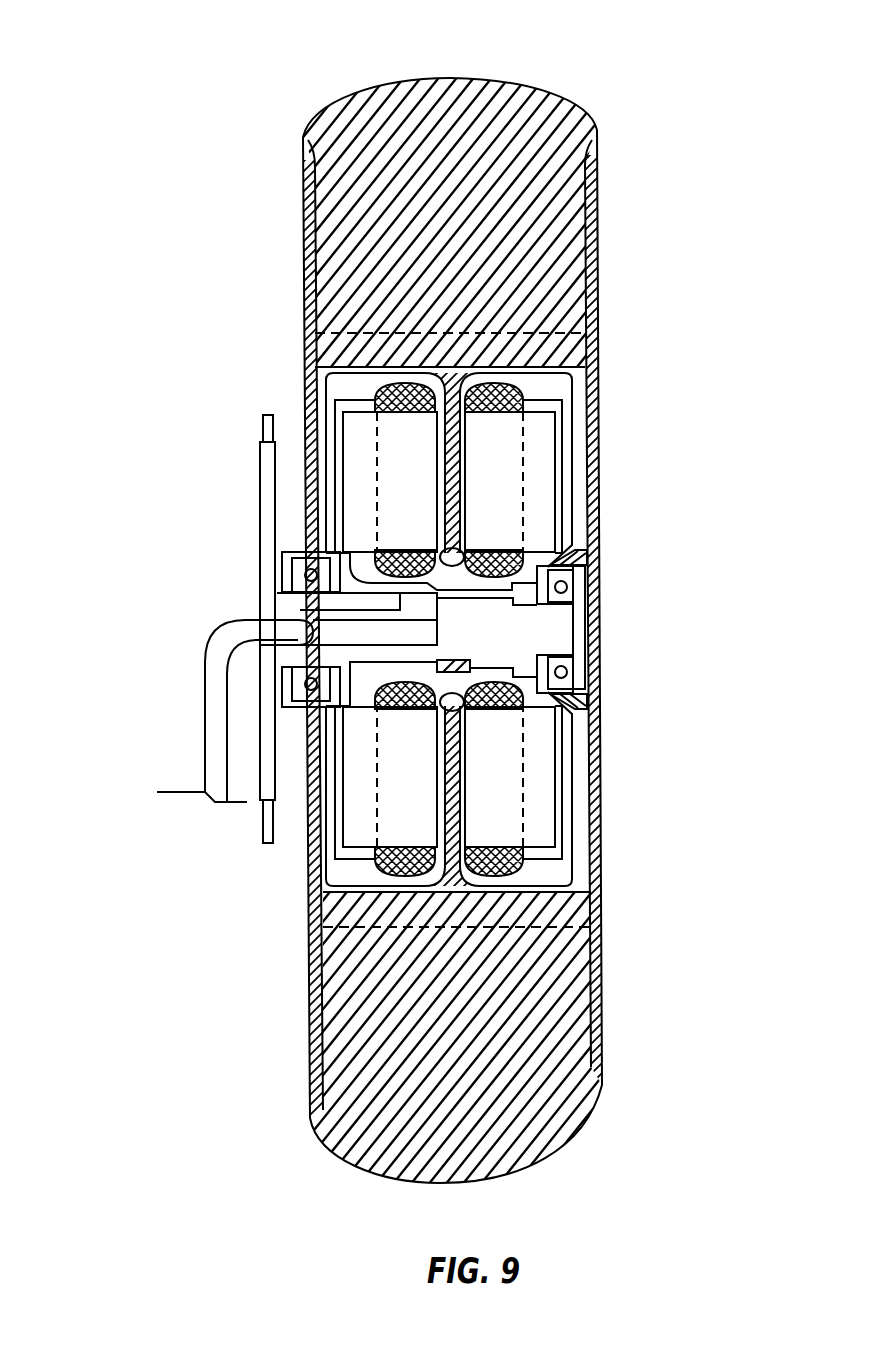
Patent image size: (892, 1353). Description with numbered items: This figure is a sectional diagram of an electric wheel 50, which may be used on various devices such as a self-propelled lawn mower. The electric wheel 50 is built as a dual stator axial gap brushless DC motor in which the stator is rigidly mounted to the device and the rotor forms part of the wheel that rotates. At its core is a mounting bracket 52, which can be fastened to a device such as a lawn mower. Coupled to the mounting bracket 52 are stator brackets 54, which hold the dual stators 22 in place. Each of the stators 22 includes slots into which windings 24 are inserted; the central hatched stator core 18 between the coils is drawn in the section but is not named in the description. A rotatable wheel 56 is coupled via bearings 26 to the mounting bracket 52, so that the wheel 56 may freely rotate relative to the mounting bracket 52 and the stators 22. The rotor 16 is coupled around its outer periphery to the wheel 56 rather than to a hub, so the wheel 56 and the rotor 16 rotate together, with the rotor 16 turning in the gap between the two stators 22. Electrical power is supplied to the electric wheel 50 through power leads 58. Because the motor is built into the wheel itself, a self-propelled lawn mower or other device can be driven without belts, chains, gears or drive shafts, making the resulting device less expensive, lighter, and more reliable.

The rotor 16 is at (452, 696).
The stator core 18 is at (465, 748).
The stators 22 is at (357, 428).
The windings 24 is at (500, 390).
The bearings 26 is at (283, 677).
The electric wheel 50 is at (118, 422).
The mounting bracket 52 is at (257, 492).
The stator brackets 54 is at (563, 453).
The rotatable wheel 56 is at (393, 78).
The power leads 58 is at (203, 705).